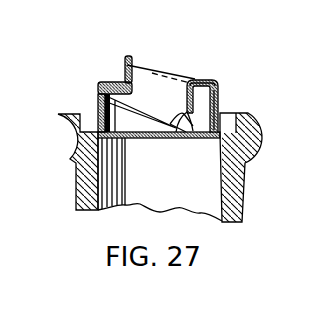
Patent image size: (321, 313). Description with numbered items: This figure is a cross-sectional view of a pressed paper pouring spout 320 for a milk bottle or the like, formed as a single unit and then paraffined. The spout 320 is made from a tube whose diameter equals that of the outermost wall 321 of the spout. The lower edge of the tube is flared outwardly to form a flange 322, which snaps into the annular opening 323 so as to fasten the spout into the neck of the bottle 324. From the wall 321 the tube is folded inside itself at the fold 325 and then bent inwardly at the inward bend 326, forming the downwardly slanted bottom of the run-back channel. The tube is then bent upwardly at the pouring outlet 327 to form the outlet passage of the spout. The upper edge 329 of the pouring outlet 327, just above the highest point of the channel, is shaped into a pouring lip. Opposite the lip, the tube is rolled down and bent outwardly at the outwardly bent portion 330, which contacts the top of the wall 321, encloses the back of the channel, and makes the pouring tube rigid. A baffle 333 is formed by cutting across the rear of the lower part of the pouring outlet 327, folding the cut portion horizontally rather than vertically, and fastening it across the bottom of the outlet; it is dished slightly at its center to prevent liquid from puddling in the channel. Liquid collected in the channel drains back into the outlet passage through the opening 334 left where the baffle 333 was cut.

The spout 320 is at (190, 79).
The outermost wall 321 is at (219, 94).
The flange 322 is at (233, 128).
The annular opening 323 is at (83, 113).
The bottle 324 is at (213, 201).
The fold 325 is at (116, 82).
The inward bend 326 is at (113, 138).
The pouring outlet 327 is at (132, 72).
The upper edge 329 is at (127, 60).
The outwardly bent portion 330 is at (212, 80).
The baffle 333 is at (206, 138).
The opening 334 is at (201, 138).